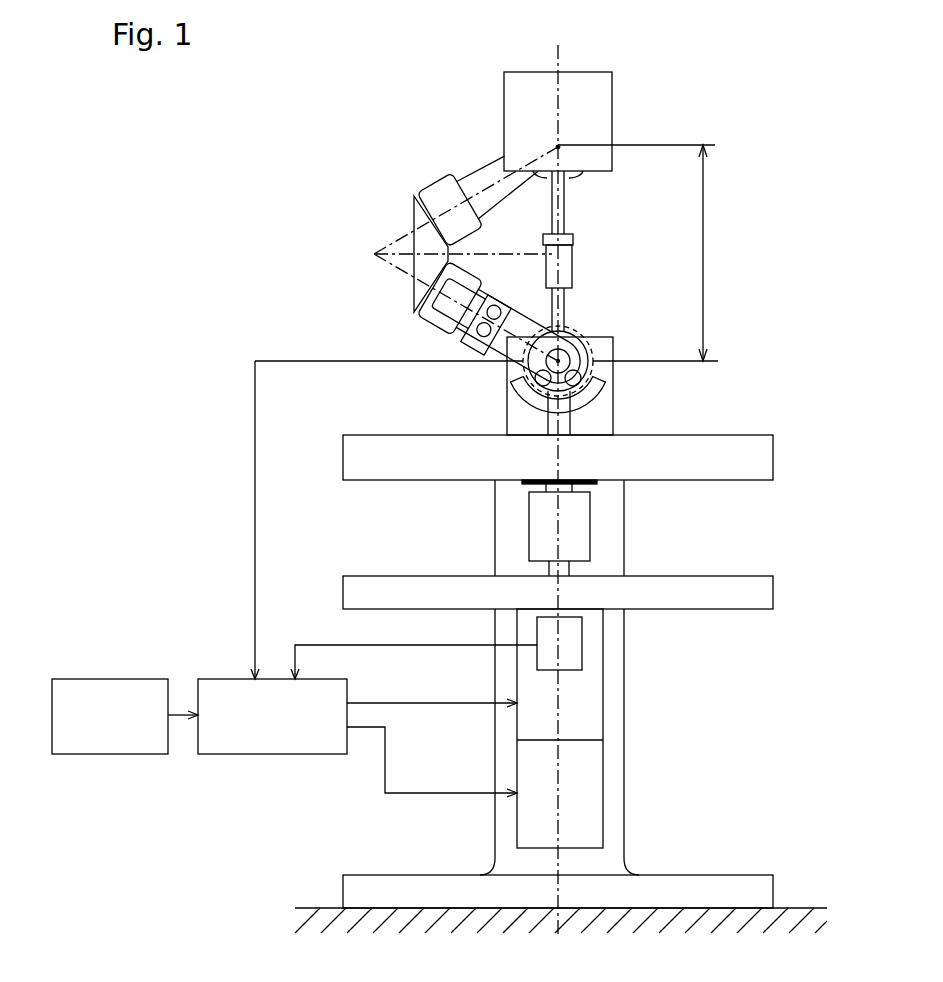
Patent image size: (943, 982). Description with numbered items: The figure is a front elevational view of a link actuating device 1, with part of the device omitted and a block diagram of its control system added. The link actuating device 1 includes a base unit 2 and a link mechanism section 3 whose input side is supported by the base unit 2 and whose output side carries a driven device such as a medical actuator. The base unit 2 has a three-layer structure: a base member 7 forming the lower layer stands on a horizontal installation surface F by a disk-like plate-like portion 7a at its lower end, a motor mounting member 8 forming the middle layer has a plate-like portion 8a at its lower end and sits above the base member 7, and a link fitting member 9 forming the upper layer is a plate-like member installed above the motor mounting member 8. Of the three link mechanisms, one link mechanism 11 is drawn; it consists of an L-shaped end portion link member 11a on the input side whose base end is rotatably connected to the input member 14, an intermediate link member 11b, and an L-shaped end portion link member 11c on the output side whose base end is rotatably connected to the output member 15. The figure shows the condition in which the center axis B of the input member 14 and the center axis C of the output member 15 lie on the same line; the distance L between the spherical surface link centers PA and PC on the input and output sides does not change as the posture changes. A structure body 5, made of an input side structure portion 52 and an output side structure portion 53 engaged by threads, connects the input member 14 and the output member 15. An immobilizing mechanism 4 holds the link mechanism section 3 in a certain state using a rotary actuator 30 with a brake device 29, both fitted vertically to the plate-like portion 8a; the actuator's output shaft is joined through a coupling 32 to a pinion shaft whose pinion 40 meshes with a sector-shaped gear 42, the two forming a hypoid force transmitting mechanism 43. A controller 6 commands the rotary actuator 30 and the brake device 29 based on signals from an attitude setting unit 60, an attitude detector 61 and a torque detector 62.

The link actuating device 1 is at (302, 137).
The base unit 2 is at (355, 523).
The link mechanism section 3 is at (338, 237).
The immobilizing mechanism 4 is at (668, 716).
The structure body 5 is at (656, 207).
The controller 6 is at (220, 678).
The base member 7 is at (625, 750).
The plate-like portion 7a is at (757, 875).
The motor mounting member 8 is at (624, 532).
The plate-like portion 8a is at (773, 576).
The link fitting member 9 is at (767, 435).
The link mechanism 11 is at (395, 225).
The end portion link member on the input side 11a is at (455, 336).
The intermediate link member 11b is at (412, 292).
The end portion link member on the output side 11c is at (460, 178).
The input member 14 is at (507, 403).
The output member 15 is at (504, 105).
The brake device 29 is at (603, 800).
The rotary actuator 30 is at (603, 688).
The coupling 32 is at (529, 530).
The pinion 40 is at (566, 405).
The sector-shaped gear 42 is at (607, 388).
The force transmitting mechanism 43 is at (684, 370).
The input side structure portion 52 is at (573, 262).
The output side structure portion 53 is at (567, 203).
The attitude setting unit 60 is at (85, 678).
The attitude detector 61 is at (575, 321).
The torque detector 62 is at (582, 645).
The center axis of the input member B is at (556, 303).
The center axis of the output member C is at (557, 203).
The horizontal installation surface F is at (328, 908).
The distance between spherical surface link centers L is at (487, 253).
The spherical surface link center on the input side PA is at (580, 348).
The spherical surface link center on the output side PC is at (558, 147).